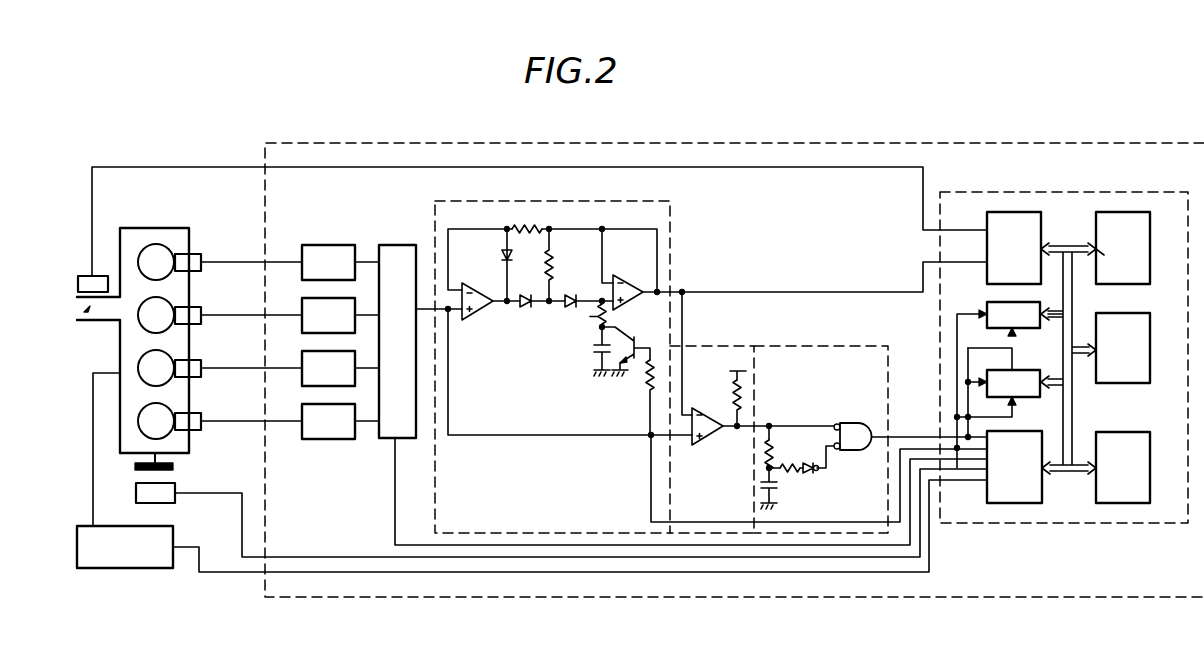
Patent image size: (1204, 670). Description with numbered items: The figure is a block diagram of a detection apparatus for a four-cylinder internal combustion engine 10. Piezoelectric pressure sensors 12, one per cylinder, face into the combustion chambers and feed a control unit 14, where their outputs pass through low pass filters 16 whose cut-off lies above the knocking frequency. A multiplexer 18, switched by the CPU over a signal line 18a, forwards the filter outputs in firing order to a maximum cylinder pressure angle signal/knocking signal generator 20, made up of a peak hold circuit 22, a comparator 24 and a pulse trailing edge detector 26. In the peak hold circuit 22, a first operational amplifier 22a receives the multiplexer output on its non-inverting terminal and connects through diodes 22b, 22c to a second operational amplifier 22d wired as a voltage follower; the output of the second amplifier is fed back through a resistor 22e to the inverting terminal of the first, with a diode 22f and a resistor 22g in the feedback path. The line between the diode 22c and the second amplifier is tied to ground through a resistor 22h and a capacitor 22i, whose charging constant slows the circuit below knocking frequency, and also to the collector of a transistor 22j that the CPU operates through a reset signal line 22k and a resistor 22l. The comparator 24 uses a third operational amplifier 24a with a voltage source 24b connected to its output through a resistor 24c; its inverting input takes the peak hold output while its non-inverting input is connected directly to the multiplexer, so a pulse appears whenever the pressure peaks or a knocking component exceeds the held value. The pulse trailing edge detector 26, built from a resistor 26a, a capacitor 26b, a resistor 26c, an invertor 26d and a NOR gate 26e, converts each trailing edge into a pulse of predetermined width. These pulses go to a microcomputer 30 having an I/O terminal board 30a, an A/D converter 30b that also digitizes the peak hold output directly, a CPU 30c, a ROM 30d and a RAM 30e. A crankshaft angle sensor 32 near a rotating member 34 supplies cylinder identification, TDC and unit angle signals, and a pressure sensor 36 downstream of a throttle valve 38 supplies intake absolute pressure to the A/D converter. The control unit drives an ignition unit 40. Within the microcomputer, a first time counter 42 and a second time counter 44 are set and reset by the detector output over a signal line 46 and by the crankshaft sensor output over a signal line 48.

The four-cylinder internal combustion engine 10 is at (150, 228).
The piezoelectric pressure sensors 12 is at (206, 254).
The control unit 14 is at (376, 143).
The low pass filters 16 is at (331, 245).
The multiplexer 18 is at (399, 245).
The signal line 18a is at (394, 505).
The maximum cylinder pressure angle signal/knocking signal generator 20 is at (672, 268).
The peak hold circuit 22 is at (539, 201).
The first operational amplifier 22a is at (475, 283).
The diode 22b is at (524, 310).
The diode 22c is at (570, 310).
The second operational amplifier 22d is at (628, 275).
The resistor 22e is at (536, 228).
The diode 22f is at (508, 261).
The resistor 22g is at (554, 264).
The resistor 22h is at (597, 326).
The capacitor 22i is at (594, 357).
The transistor 22j is at (636, 337).
The reset signal line 22k is at (648, 464).
The resistor 22l is at (647, 381).
The comparator 24 is at (716, 345).
The third operational amplifier 24a is at (706, 446).
The voltage source 24b is at (734, 368).
The resistor 24c is at (734, 395).
The pulse trailing edge detector 26 is at (832, 345).
The resistor 26a is at (773, 445).
The capacitor 26b is at (775, 492).
The resistor 26c is at (792, 473).
The invertor 26d is at (818, 468).
The NOR gate 26e is at (856, 423).
The microcomputer 30 is at (968, 192).
The input/output (I/O) terminal board 30a is at (1030, 431).
The A/D converter 30b is at (986, 216).
The CPU 30c is at (1096, 214).
The ROM 30d is at (1109, 383).
The RAM 30e is at (1141, 432).
The crankshaft angle sensor 32 is at (180, 500).
The rotating member 34 is at (183, 463).
The pressure sensor 36 is at (80, 276).
The throttle valve 38 is at (86, 312).
The ignition unit 40 is at (128, 568).
The first time counter 42 is at (982, 303).
The second time counter 44 is at (1028, 366).
The signal line 46 is at (965, 397).
The signal line 48 is at (957, 422).